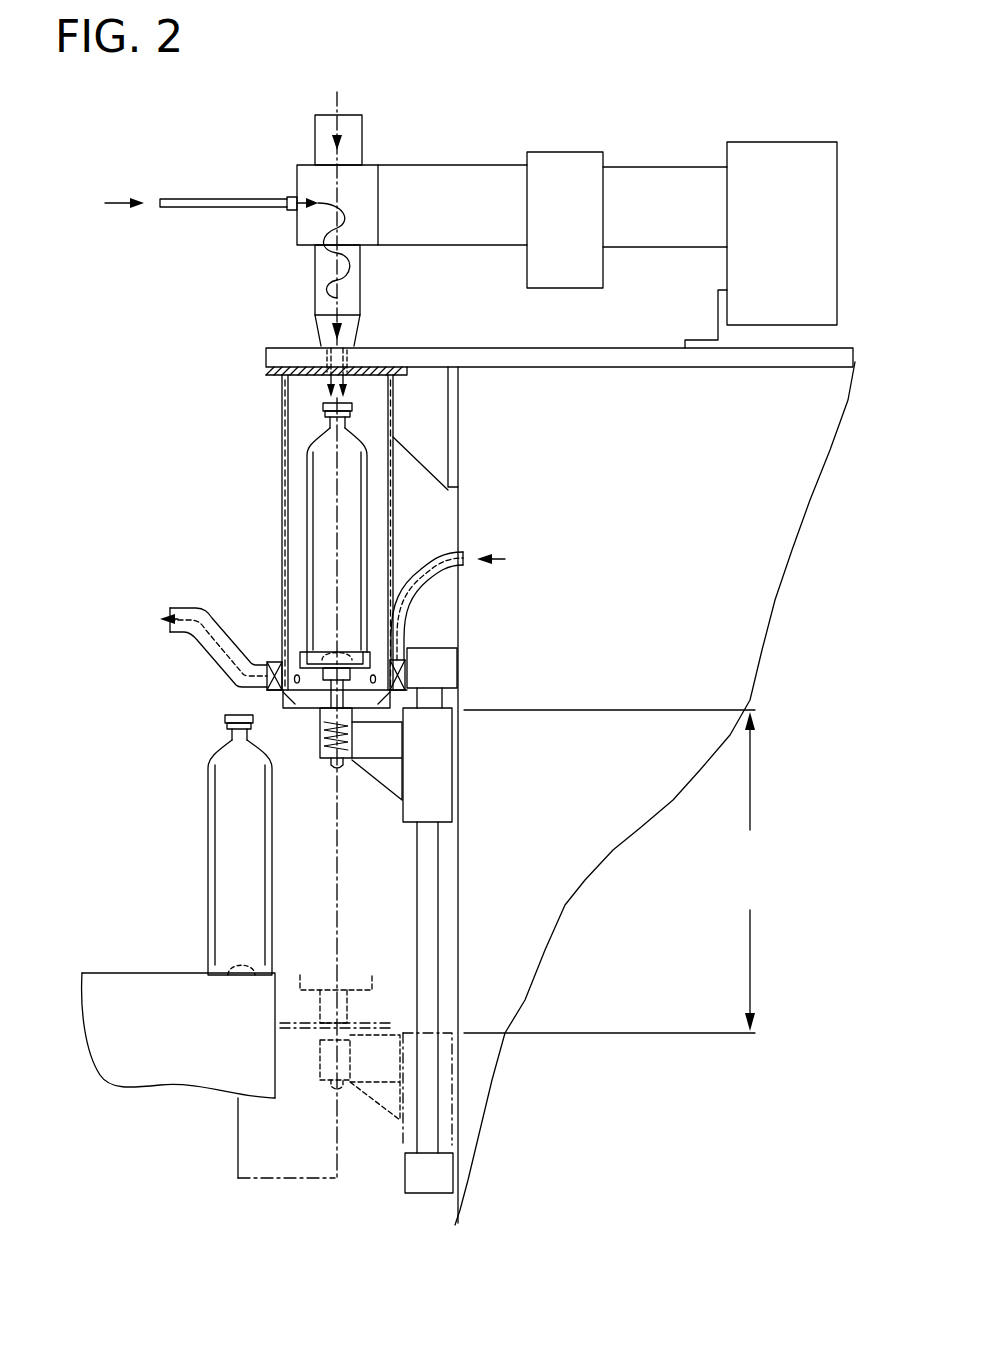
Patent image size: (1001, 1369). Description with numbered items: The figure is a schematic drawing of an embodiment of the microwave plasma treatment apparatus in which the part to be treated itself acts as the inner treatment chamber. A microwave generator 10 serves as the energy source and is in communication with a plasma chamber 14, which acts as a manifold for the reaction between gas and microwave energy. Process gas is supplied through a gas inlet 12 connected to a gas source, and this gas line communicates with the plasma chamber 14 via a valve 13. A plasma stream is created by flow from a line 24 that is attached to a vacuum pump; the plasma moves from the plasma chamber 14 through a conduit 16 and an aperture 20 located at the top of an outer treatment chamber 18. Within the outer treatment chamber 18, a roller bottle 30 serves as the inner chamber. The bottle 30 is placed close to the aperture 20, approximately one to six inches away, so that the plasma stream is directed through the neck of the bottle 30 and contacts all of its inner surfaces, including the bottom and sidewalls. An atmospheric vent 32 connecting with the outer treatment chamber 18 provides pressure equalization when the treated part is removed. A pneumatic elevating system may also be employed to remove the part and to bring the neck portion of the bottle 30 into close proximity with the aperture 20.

The microwave generator 10 is at (580, 118).
The gas inlet 12 is at (210, 197).
The valve 13 is at (291, 196).
The plasma chamber 14 is at (370, 165).
The conduit 16 is at (318, 273).
The outer treatment chamber 18 is at (298, 414).
The aperture 20 is at (330, 360).
The line 24 is at (222, 669).
The roller bottle 30 is at (322, 566).
The atmospheric vent 32 is at (412, 605).